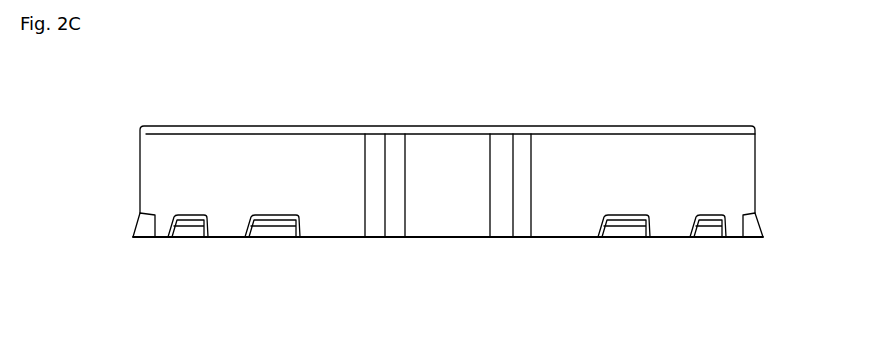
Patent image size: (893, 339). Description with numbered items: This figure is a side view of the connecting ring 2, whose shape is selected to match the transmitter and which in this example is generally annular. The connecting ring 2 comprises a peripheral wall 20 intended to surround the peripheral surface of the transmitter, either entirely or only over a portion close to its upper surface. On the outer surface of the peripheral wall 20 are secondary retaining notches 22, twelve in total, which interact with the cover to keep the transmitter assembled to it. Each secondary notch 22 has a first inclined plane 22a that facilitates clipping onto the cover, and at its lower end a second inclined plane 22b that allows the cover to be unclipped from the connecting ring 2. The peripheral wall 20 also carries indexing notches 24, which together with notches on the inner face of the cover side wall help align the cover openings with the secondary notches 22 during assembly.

The connecting ring 2 is at (99, 148).
The peripheral wall 20 is at (728, 171).
The secondary retaining notch 22 is at (631, 250).
The first inclined plane 22a is at (263, 218).
The second inclined plane 22b is at (277, 229).
The indexing notch 24 is at (433, 210).